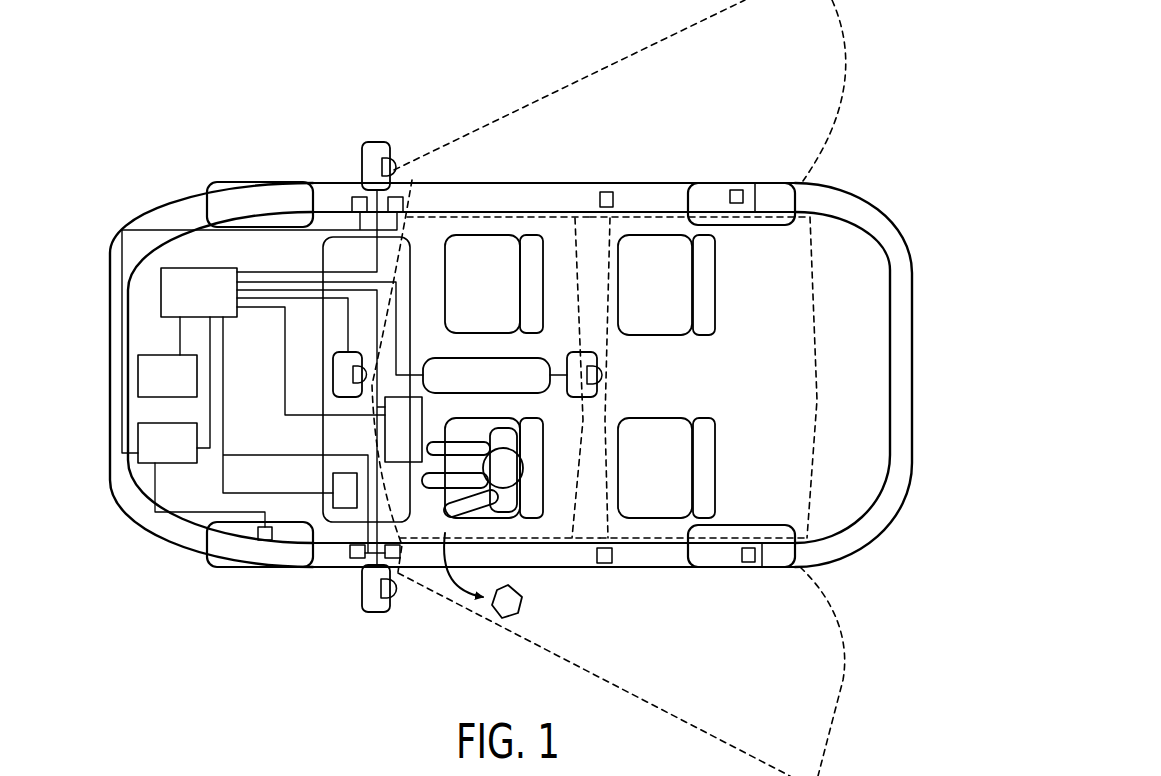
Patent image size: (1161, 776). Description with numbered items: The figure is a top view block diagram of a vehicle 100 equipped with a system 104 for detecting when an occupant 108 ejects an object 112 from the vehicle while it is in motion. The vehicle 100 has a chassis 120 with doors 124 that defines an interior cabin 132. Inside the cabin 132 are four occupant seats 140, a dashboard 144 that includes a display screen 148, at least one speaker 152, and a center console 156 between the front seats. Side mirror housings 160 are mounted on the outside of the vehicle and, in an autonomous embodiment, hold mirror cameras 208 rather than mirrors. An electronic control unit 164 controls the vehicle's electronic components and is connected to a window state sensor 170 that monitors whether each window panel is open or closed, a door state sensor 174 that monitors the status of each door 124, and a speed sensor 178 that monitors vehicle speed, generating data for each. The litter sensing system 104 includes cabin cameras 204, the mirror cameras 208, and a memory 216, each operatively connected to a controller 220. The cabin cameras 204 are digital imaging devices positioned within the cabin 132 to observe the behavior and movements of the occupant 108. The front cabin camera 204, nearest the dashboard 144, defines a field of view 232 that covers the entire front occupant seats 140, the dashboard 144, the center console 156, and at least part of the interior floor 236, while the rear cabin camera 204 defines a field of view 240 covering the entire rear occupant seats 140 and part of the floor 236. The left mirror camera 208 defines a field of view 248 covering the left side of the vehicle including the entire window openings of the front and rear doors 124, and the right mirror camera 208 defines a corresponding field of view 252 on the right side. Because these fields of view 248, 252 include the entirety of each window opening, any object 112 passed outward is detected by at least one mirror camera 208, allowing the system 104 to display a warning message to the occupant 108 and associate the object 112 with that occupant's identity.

The vehicle 100 is at (169, 116).
The system 104 is at (88, 246).
The occupant 108 is at (500, 460).
The object 112 is at (523, 592).
The chassis 120 is at (912, 300).
The door 124 is at (507, 183).
The interior cabin 132 is at (870, 250).
The occupant seat 140 is at (503, 300).
The dashboard 144 is at (392, 372).
The display screen 148 is at (383, 406).
The speaker 152 is at (340, 474).
The center console 156 is at (478, 345).
The side mirror housing 160 is at (361, 163).
The electronic control unit 164 is at (138, 456).
The window state sensor 170 is at (403, 204).
The door state sensor 174 is at (352, 204).
The speed sensor 178 is at (258, 538).
The cabin camera 204 is at (333, 383).
The mirror camera 208 is at (400, 175).
The memory 216 is at (138, 371).
The controller 220 is at (207, 268).
The field of view 232 is at (575, 250).
The interior floor 236 is at (755, 391).
The field of view 240 is at (810, 286).
The field of view 248 is at (845, 655).
The field of view 252 is at (607, 62).